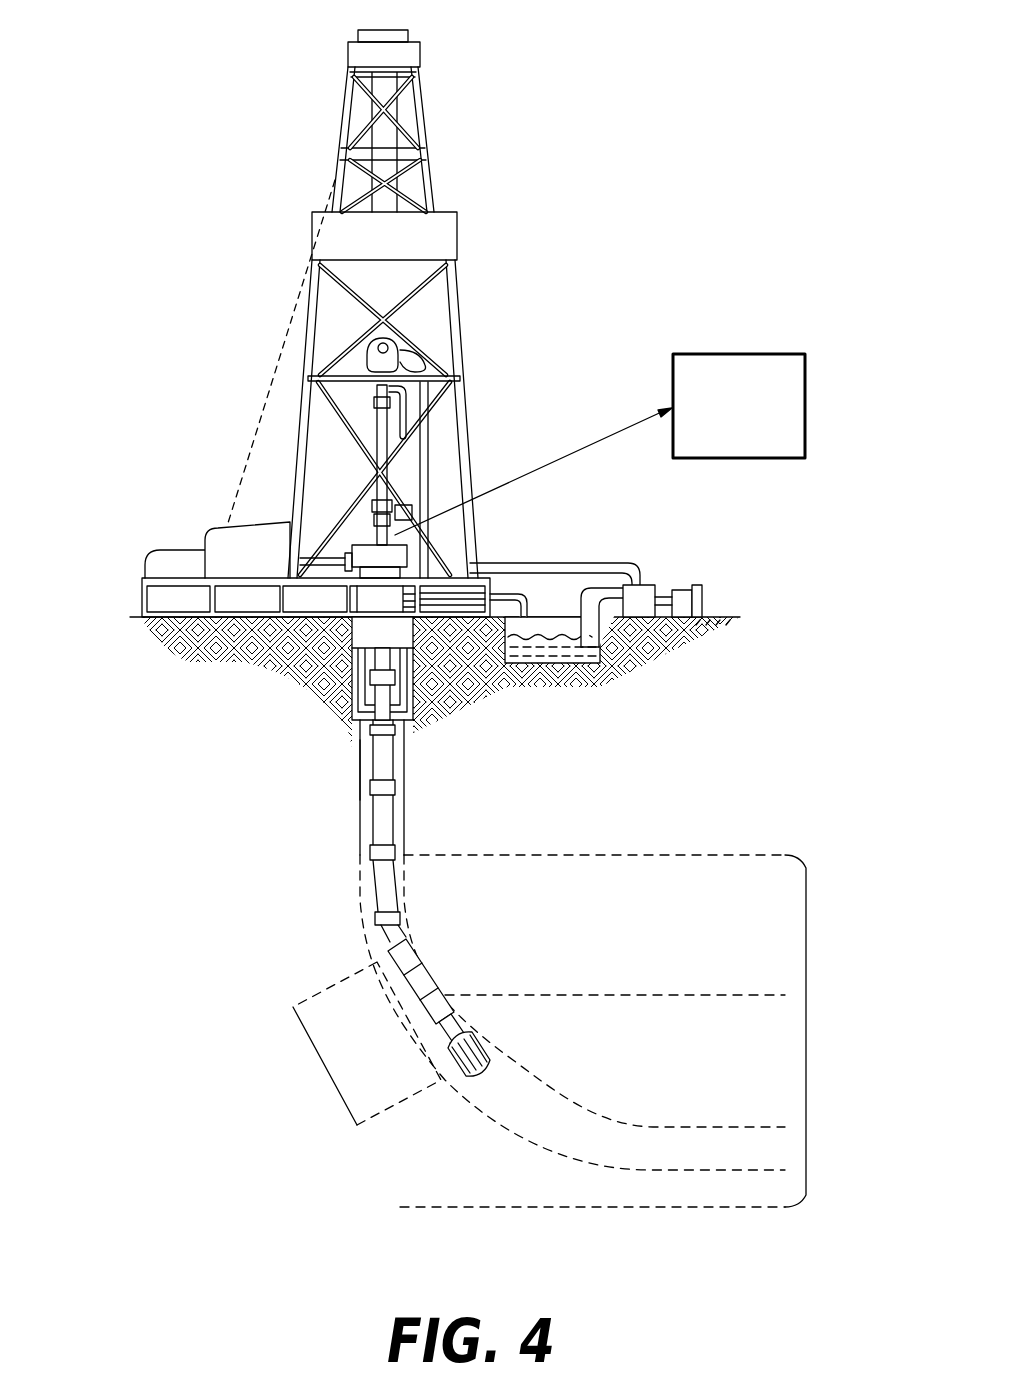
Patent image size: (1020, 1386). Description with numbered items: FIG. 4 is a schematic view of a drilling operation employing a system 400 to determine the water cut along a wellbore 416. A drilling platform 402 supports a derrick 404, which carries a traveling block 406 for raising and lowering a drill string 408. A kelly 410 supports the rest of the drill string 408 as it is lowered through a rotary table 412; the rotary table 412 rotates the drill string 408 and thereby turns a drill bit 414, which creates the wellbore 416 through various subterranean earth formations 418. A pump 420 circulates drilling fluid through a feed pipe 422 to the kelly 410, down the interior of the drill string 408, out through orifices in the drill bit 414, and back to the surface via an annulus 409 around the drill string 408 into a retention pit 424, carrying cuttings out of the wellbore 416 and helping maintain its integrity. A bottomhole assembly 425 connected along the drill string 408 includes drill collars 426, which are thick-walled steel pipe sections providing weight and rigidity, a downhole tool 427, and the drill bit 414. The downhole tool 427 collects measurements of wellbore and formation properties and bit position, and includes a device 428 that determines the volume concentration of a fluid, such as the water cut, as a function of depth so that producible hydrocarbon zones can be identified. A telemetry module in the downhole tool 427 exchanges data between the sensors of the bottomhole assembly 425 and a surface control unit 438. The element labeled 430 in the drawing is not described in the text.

The system 400 is at (208, 92).
The drilling platform 402 is at (140, 597).
The derrick 404 is at (437, 150).
The traveling block 406 is at (413, 362).
The drill string 408 is at (393, 768).
The annulus 409 is at (362, 815).
The kelly 410 is at (365, 410).
The rotary table 412 is at (358, 545).
The drill bit 414 is at (492, 1075).
The wellbore 416 is at (407, 815).
The subterranean earth formations 418 is at (806, 1030).
The pump 420 is at (650, 585).
The feed pipe 422 is at (548, 563).
The retention pit 424 is at (540, 660).
The bottomhole assembly 425 is at (320, 1070).
The drill collars 426 is at (440, 1032).
The downhole tool 427 is at (428, 993).
The device 428 is at (393, 950).
The hose 430 is at (413, 500).
The surface control unit 438 is at (600, 444).